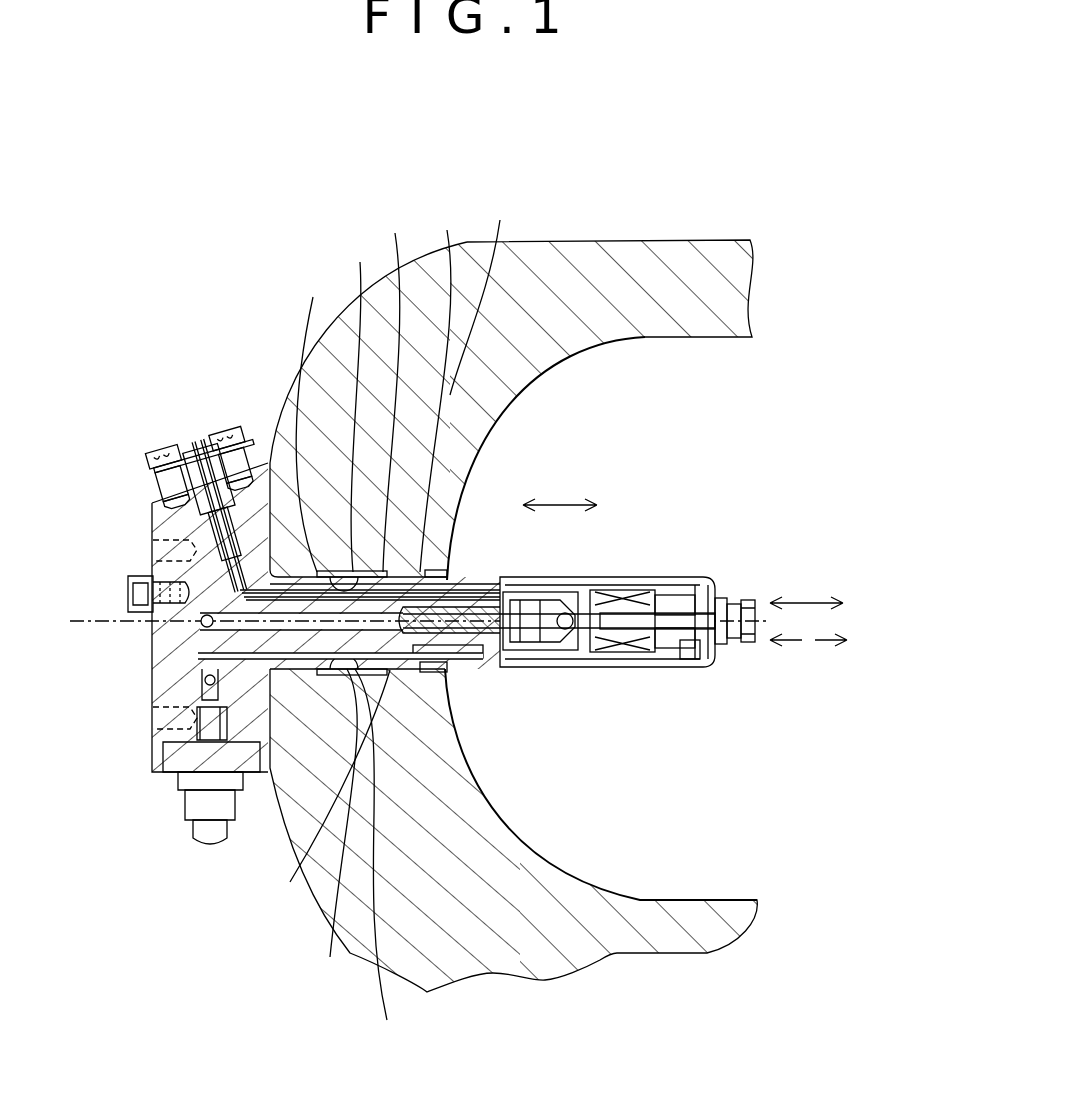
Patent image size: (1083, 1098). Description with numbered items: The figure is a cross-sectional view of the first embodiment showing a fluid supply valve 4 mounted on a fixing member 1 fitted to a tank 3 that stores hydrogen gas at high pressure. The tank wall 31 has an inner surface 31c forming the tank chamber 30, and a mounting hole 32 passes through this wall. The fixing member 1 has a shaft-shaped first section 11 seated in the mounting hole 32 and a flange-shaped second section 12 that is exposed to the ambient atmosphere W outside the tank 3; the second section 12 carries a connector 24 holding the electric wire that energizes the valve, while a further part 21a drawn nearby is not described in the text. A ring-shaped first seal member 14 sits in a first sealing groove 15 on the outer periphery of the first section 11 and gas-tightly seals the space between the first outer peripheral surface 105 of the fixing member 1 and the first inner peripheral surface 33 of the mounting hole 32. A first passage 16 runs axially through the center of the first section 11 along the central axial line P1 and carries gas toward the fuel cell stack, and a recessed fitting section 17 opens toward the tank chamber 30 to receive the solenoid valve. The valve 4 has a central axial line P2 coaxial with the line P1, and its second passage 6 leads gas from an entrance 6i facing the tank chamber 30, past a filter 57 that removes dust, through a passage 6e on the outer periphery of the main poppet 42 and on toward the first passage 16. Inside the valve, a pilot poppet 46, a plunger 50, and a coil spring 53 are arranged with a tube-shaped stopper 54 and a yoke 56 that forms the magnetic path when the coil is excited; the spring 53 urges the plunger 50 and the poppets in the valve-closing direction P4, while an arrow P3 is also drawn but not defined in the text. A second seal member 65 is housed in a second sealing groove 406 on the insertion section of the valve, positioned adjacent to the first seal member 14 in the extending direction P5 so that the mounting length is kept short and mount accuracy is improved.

The fixing member 1 is at (377, 864).
The tank 3 is at (690, 327).
The fluid supply valve 4 is at (470, 750).
The second passage 6 is at (633, 575).
The passage 6e is at (580, 577).
The entrance 6i is at (723, 578).
The first section 11 is at (377, 669).
The second section 12 is at (155, 660).
The first seal member 14 is at (427, 579).
The first sealing groove 15 is at (447, 572).
The first passage 16 is at (287, 707).
The recessed fitting section 17 is at (478, 575).
The connector pipe 21a is at (272, 480).
The connector 24 is at (200, 440).
The tank chamber 30 is at (735, 446).
The tank wall 31 is at (463, 457).
The inner surface 31c is at (490, 423).
The mounting hole 32 is at (340, 596).
The first inner peripheral surface 33 is at (360, 401).
The main poppet 42 is at (615, 587).
The pilot poppet 46 is at (570, 667).
The plunger 50 is at (587, 663).
The spring 53 is at (613, 663).
The stopper 54 is at (690, 668).
The yoke 56 is at (643, 663).
The filter 57 is at (713, 647).
The second seal member 65 is at (484, 289).
The first outer peripheral surface 105 is at (323, 592).
The second sealing groove 406 is at (445, 378).
The central axial line P1 is at (150, 627).
The central axial line P2 is at (523, 575).
The direction P3 is at (822, 647).
The valve-closing direction P4 is at (790, 647).
The extending direction P5 is at (560, 505).
The ambient atmosphere W is at (205, 608).